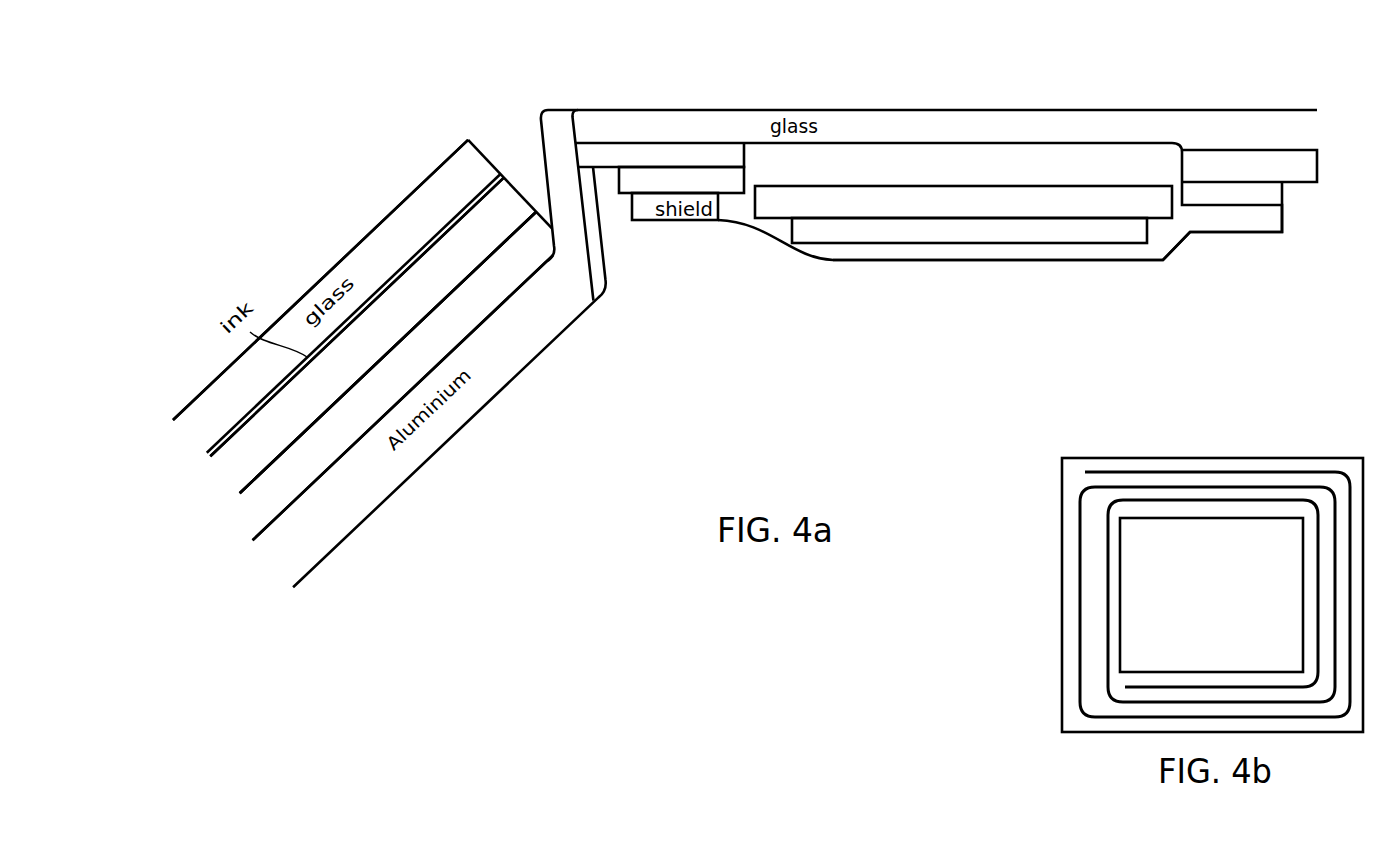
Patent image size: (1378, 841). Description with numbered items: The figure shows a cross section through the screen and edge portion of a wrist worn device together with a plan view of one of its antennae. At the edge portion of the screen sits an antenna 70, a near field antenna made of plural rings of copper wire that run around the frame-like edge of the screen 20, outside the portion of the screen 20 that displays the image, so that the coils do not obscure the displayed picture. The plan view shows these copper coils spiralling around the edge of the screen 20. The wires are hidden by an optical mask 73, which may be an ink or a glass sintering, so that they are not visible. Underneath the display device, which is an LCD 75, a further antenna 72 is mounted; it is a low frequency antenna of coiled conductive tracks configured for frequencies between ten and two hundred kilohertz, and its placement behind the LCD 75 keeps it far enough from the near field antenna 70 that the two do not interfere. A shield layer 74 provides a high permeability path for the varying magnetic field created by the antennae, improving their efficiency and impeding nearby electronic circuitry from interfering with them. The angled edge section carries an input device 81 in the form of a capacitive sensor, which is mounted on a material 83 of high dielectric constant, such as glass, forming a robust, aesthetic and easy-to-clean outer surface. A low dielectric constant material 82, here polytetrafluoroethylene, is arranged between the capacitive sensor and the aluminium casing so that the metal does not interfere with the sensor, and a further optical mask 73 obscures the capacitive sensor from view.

In FIG. 4b, the screen 20 is at (1152, 595).
In FIG. 4a, the antenna 70 is at (735, 180).
In FIG. 4b, the antenna 70 is at (1152, 470).
In FIG. 4a, the further antenna 72 is at (1073, 232).
In FIG. 4a, the optical mask 73 is at (638, 150).
In FIG. 4a, the shield layer 74 is at (1162, 247).
In FIG. 4a, the LCD 75 is at (1162, 203).
In FIG. 4a, the input device 81 is at (235, 472).
In FIG. 4a, the low dielectric constant material 82 is at (253, 513).
In FIG. 4a, the material having a high dielectric constant 83 is at (297, 312).